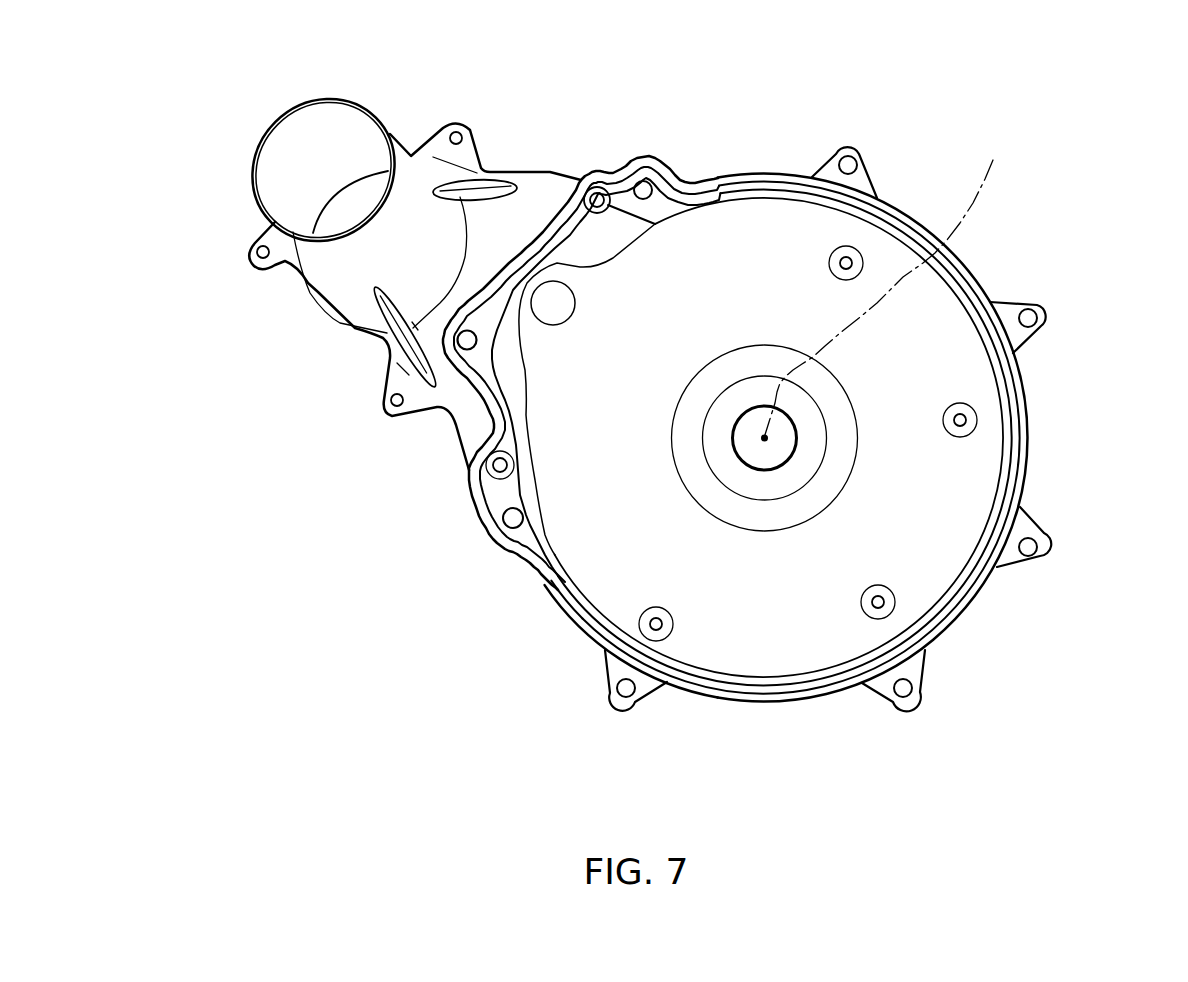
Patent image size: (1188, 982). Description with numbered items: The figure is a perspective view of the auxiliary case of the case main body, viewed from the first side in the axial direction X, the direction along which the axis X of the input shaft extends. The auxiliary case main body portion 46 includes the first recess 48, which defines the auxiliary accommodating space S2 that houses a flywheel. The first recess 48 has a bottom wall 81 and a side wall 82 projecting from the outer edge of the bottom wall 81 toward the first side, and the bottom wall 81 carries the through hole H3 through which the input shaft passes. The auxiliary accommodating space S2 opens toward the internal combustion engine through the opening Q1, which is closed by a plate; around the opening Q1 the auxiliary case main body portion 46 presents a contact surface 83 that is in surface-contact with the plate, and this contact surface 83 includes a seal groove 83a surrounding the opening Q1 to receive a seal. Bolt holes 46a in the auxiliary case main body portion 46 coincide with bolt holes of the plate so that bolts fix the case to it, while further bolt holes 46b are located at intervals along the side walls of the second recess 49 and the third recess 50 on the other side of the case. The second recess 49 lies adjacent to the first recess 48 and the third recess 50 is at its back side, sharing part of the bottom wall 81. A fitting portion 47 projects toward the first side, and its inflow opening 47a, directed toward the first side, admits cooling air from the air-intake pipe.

The auxiliary case main body portion 46 is at (627, 170).
The bolt holes 46a is at (1037, 549).
The bolt holes 46b is at (858, 255).
The fitting portion 47 is at (403, 177).
The inflow opening 47a is at (285, 150).
The first recess 48 is at (787, 660).
The second recess 49 is at (499, 214).
The third recess 50 is at (757, 247).
The bottom wall 81 is at (935, 572).
The side wall 82 is at (991, 454).
The contact surface 83 is at (653, 683).
The seal groove 83a is at (590, 637).
The through hole H3 is at (793, 446).
The axis X is at (883, 280).
The auxiliary accommodating space S2 is at (955, 377).
The opening Q1 is at (580, 568).